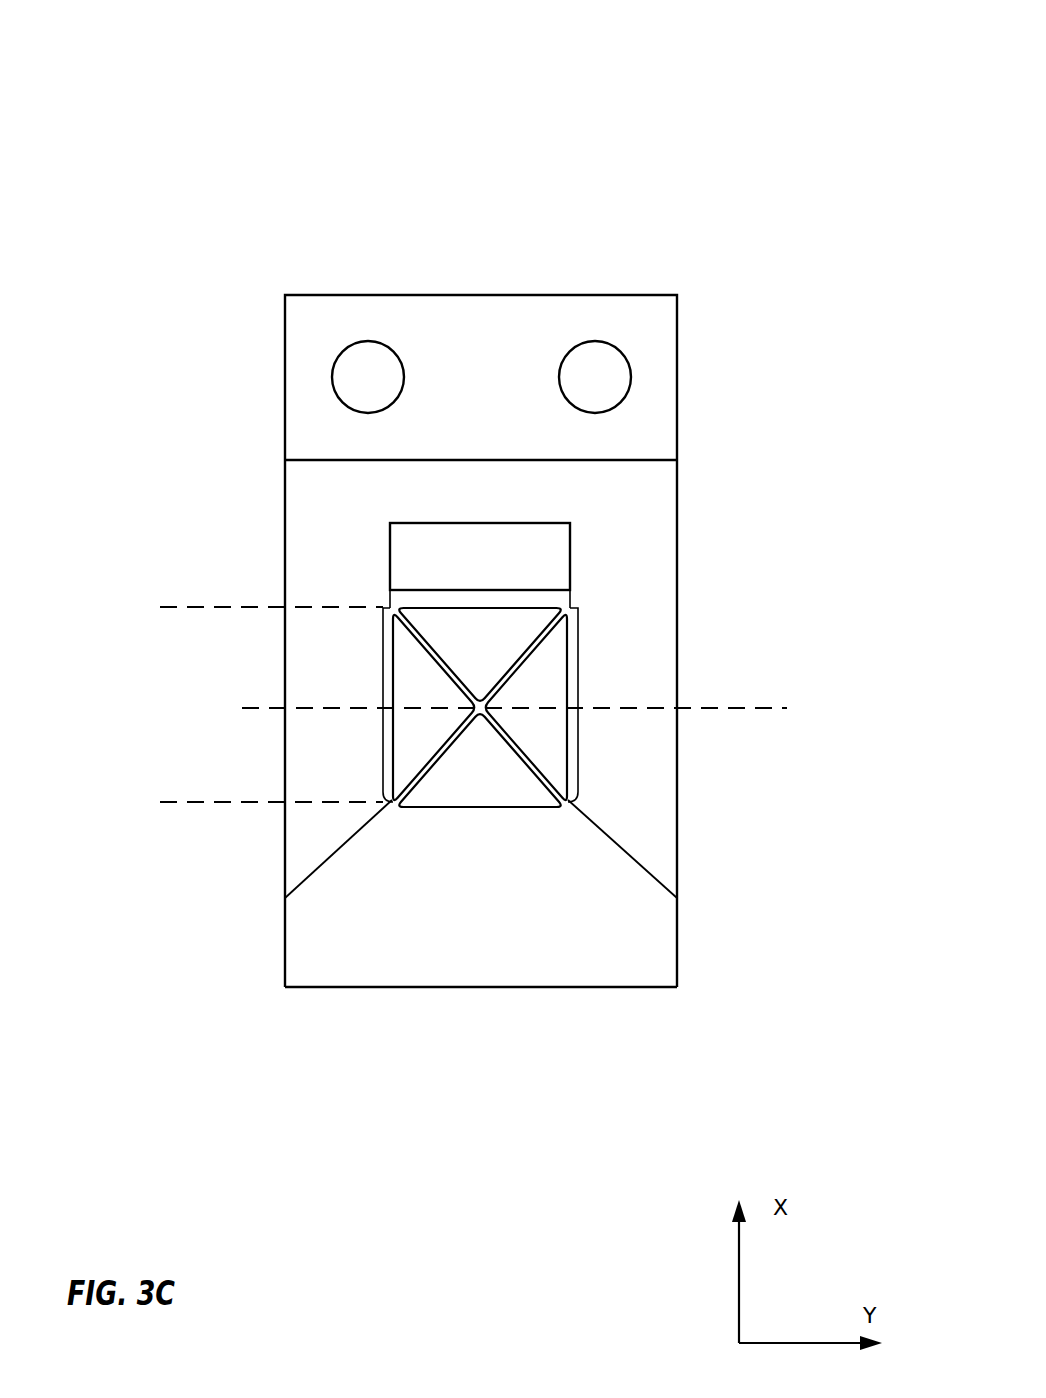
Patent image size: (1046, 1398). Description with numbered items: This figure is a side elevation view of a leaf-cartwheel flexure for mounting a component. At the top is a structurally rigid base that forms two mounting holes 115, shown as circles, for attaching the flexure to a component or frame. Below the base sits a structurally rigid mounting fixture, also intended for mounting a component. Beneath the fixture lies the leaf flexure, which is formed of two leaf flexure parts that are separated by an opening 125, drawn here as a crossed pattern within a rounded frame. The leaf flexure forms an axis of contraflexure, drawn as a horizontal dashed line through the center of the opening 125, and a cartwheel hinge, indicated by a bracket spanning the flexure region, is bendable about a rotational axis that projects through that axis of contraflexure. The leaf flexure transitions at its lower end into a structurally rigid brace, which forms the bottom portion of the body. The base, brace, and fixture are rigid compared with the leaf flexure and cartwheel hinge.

The mounting holes 115 is at (589, 360).
The opening 125 is at (562, 677).